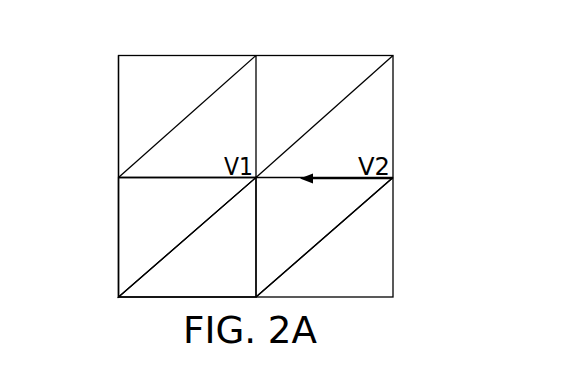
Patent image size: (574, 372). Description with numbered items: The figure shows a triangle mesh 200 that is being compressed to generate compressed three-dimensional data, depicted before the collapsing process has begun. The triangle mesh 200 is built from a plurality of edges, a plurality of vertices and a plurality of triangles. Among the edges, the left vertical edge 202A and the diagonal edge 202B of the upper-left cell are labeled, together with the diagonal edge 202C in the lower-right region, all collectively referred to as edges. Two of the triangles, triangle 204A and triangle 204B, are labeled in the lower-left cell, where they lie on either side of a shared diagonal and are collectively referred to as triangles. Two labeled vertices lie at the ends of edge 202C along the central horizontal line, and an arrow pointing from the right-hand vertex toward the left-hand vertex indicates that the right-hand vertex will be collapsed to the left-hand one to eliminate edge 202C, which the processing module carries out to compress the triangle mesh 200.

The triangle mesh 200 is at (496, 52).
The edge 202A is at (118, 136).
The edge 202B is at (242, 68).
The edge 202C is at (353, 179).
The triangle 204A is at (190, 224).
The triangle 204B is at (237, 280).